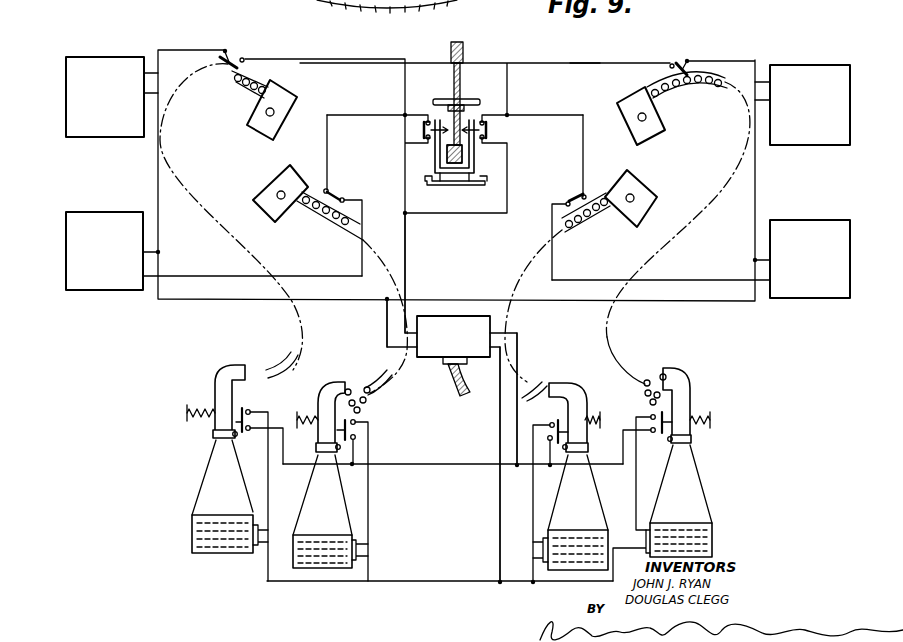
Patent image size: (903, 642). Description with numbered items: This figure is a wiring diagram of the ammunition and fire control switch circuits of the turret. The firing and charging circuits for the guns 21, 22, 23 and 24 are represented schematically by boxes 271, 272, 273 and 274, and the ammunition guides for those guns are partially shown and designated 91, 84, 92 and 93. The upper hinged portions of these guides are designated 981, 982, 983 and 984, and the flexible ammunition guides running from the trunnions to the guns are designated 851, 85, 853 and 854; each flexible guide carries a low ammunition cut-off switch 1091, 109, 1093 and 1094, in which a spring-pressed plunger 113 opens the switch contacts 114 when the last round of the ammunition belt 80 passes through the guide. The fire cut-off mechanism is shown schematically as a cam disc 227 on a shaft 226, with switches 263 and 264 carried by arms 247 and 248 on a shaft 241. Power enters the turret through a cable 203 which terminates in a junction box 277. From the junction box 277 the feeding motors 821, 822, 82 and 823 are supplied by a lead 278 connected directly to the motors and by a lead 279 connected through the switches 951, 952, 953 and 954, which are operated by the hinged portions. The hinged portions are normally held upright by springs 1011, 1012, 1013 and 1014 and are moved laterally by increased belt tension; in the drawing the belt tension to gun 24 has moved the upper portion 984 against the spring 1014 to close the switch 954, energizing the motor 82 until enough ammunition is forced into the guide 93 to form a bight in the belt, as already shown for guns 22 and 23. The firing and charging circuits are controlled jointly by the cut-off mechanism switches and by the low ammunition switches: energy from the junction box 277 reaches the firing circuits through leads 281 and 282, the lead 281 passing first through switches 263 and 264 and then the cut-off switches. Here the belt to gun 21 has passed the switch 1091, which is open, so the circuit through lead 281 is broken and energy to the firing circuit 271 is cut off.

The gun 21 is at (290, 100).
The gun 22 is at (289, 182).
The gun 23 is at (650, 135).
The gun 24 is at (660, 199).
The ammunition belt 80 is at (352, 396).
The feeding motor 82 is at (563, 562).
The feeding motor 821 is at (218, 552).
The feeding motor 822 is at (322, 570).
The feeding motor 823 is at (714, 531).
The ammunition guide 84 is at (312, 500).
The flexible ammunition guide 85 is at (322, 215).
The flexible ammunition guide 851 is at (221, 85).
The flexible ammunition guide 853 is at (698, 88).
The flexible ammunition guide 854 is at (587, 213).
The ammunition guide 91 is at (200, 497).
The ammunition guide 92 is at (681, 484).
The ammunition guide 93 is at (578, 492).
The switch 951 is at (250, 414).
The switch 952 is at (356, 432).
The switch 953 is at (656, 437).
The switch 954 is at (556, 430).
The upper hinged portion 981 is at (218, 386).
The upper hinged portion 982 is at (330, 386).
The upper hinged portion 983 is at (690, 397).
The upper hinged portion 984 is at (572, 397).
The spring 1011 is at (188, 416).
The spring 1012 is at (302, 412).
The spring 1013 is at (712, 430).
The spring 1014 is at (596, 428).
The low ammunition cut-off switch 109 is at (345, 193).
The low ammunition cut-off switch 1091 is at (233, 60).
The low ammunition cut-off switch 1093 is at (678, 60).
The low ammunition cut-off switch 1094 is at (574, 195).
The spring-pressed plunger 113 is at (356, 207).
The switch contacts 114 is at (327, 189).
The cable 203 is at (460, 388).
The shaft 226 is at (470, 101).
The cam disc 227 is at (451, 56).
The shaft 241 is at (476, 183).
The arm 247 is at (475, 152).
The arm 248 is at (438, 152).
The switch 263 is at (490, 131).
The switch 264 is at (422, 131).
The firing and charging circuit 271 is at (103, 132).
The firing and charging circuit 272 is at (102, 289).
The firing and charging circuit 273 is at (808, 135).
The firing and charging circuit 274 is at (808, 296).
The junction box 277 is at (475, 322).
The lead 278 is at (497, 512).
The lead 279 is at (518, 352).
The lead 281 is at (410, 268).
The lead 282 is at (386, 312).